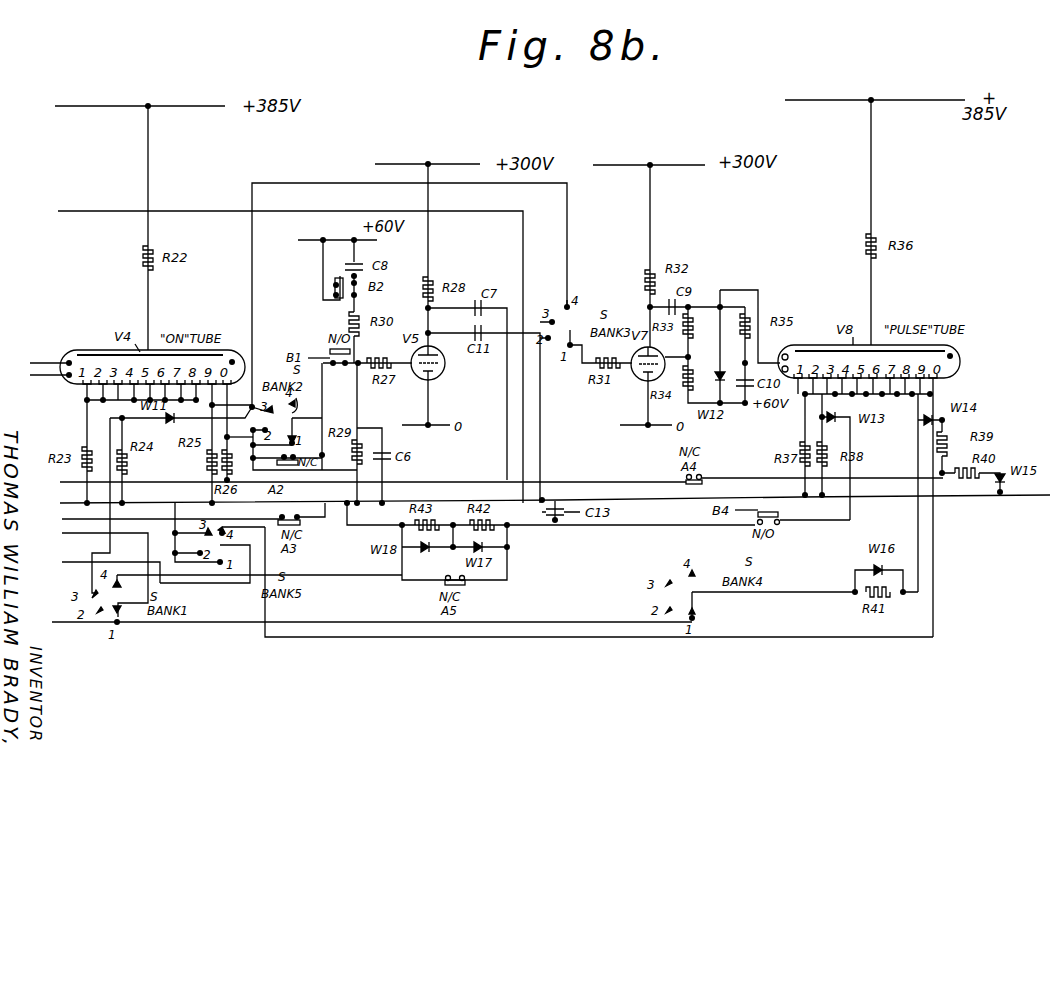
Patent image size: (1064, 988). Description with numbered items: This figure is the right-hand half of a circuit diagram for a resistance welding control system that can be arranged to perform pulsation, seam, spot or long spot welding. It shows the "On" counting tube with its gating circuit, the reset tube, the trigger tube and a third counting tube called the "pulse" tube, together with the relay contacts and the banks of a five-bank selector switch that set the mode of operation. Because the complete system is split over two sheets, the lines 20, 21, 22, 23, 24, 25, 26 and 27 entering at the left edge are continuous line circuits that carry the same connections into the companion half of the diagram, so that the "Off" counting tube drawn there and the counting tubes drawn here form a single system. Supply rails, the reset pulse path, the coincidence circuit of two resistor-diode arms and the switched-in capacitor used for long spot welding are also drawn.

The line 20 is at (37, 364).
The line 21 is at (37, 376).
The line 22 is at (487, 483).
The line 23 is at (540, 505).
The line 24 is at (156, 519).
The line 25 is at (89, 571).
The line 26 is at (95, 568).
The line 27 is at (359, 623).